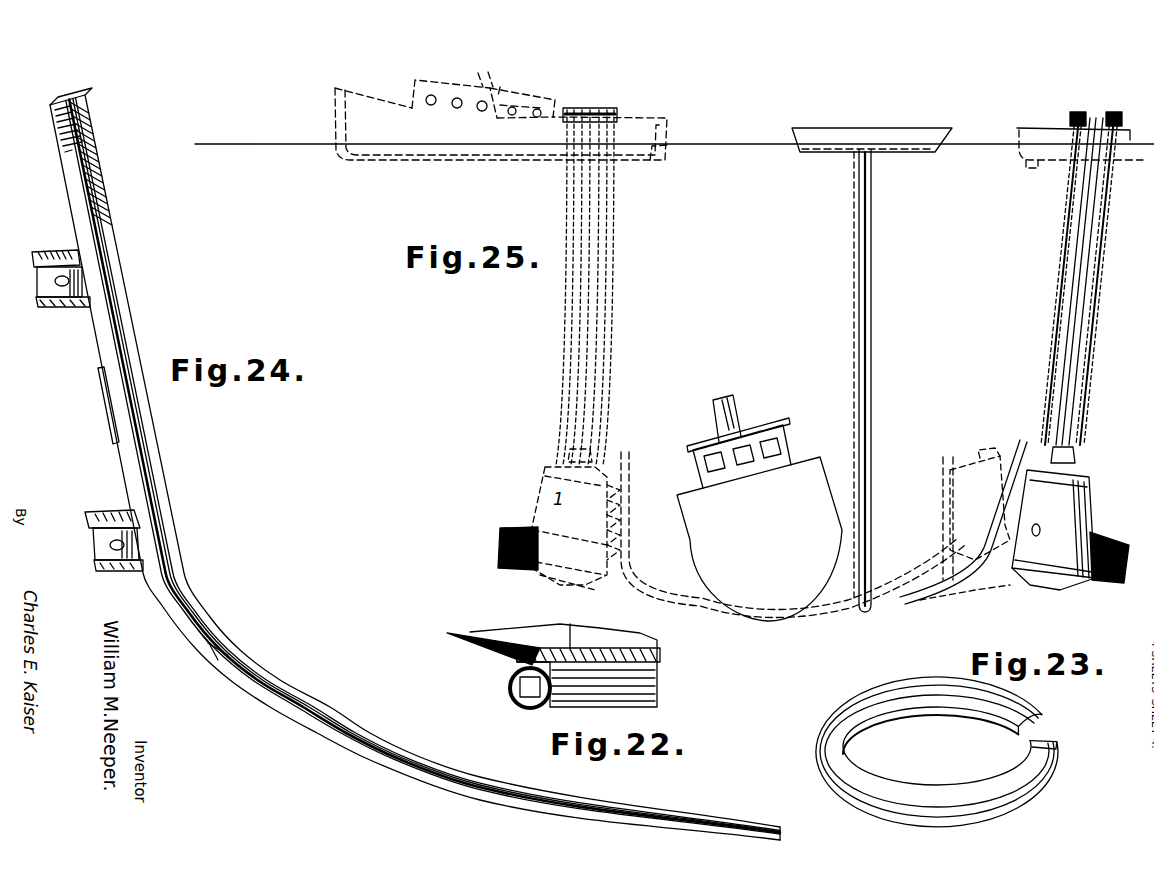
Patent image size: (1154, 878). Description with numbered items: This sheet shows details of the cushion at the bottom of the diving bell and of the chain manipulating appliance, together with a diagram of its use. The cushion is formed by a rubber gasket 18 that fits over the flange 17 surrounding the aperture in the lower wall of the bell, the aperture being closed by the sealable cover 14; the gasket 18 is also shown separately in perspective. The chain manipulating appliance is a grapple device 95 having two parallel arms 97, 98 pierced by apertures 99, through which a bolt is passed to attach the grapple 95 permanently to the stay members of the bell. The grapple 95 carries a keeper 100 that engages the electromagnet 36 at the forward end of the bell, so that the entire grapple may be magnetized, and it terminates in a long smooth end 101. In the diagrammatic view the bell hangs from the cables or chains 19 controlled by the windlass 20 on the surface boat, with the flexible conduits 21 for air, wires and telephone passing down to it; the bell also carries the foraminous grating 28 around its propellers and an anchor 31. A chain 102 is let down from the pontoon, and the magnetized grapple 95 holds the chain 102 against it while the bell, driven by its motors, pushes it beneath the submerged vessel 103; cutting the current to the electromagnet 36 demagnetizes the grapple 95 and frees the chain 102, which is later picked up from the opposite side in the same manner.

In FIG. 22, the second cover 14 is at (661, 651).
In FIG. 22, the flange 17 is at (512, 679).
In FIG. 22, the rubber gasket 18 is at (527, 707).
In FIG. 23, the rubber gasket 18 is at (832, 724).
In FIG. 25, the cables or chains 19 is at (1103, 301).
In FIG. 25, the windlass 20 is at (1072, 118).
In FIG. 25, the flexible conduits 21 is at (1076, 283).
In FIG. 25, the foraminous grating 28 is at (1106, 540).
In FIG. 25, the anchor 31 is at (1033, 582).
In FIG. 25, the electromagnet 36 is at (1014, 505).
In FIG. 24, the grapple device 95 is at (191, 591).
In FIG. 25, the grapple device 95 is at (633, 561).
In FIG. 24, the parallel arm 97 is at (98, 571).
In FIG. 24, the parallel arm 98 is at (53, 307).
In FIG. 24, the apertures 99 is at (110, 545).
In FIG. 24, the keeper 100 is at (105, 418).
In FIG. 24, the long smooth end 101 is at (751, 820).
In FIG. 25, the chain 102 is at (873, 434).
In FIG. 25, the submerged vessel 103 is at (759, 508).